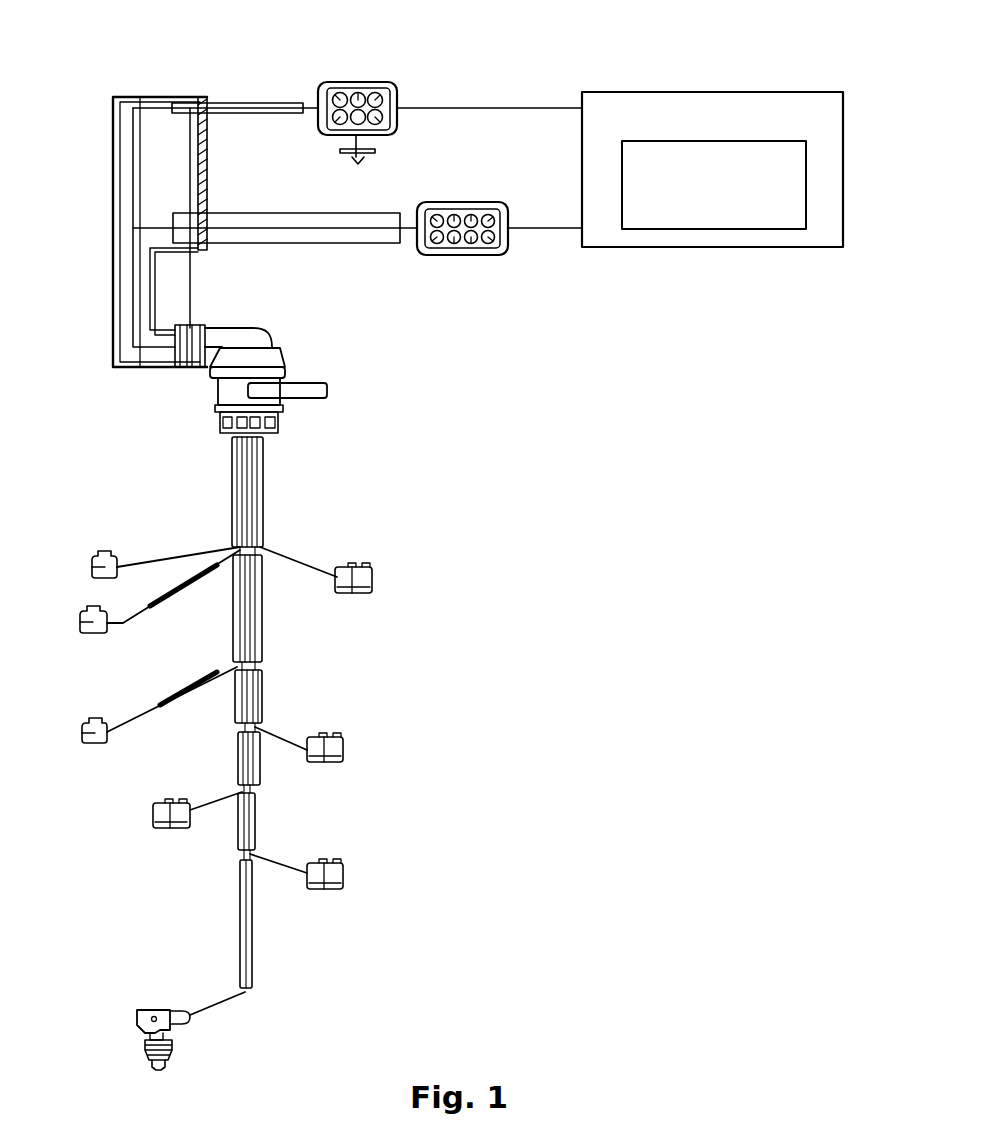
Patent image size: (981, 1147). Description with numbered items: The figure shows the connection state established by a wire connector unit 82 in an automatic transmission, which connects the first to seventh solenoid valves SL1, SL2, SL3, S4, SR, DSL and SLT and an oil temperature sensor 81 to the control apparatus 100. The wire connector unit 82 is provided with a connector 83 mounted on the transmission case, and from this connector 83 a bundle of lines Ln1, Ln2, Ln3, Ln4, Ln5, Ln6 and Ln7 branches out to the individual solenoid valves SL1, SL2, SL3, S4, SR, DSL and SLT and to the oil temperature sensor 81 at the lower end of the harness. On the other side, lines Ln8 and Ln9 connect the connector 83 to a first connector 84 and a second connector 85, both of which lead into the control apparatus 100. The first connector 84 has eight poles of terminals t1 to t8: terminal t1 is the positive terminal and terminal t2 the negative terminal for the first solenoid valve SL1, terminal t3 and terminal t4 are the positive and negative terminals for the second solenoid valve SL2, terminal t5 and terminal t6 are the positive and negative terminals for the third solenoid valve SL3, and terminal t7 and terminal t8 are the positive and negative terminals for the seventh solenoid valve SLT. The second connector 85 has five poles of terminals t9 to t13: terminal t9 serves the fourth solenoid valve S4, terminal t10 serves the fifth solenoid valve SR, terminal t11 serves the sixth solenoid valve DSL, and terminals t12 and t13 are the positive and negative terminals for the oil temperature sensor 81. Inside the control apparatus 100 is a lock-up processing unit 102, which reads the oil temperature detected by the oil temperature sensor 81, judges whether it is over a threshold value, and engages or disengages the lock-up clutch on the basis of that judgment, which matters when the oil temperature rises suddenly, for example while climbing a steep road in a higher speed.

The control apparatus 100 is at (733, 247).
The lock-up processing unit 102 is at (670, 230).
The oil temperature sensor 81 is at (138, 1010).
The wire connector unit 82 is at (107, 356).
The connector 83 is at (213, 385).
The first connector 84 is at (475, 246).
The second connector 85 is at (416, 107).
The terminal t1 is at (437, 220).
The terminal t2 is at (437, 237).
The terminal t3 is at (455, 220).
The terminal t4 is at (454, 237).
The terminal t5 is at (472, 220).
The terminal t6 is at (471, 237).
The terminal t7 is at (490, 221).
The terminal t8 is at (492, 240).
The terminal t9 is at (342, 98).
The terminal t10 is at (333, 120).
The terminal t11 is at (360, 98).
The terminal t12 is at (380, 100).
The terminal t13 is at (377, 120).
The line Ln1 is at (280, 863).
The line Ln2 is at (305, 560).
The line Ln3 is at (283, 733).
The line Ln4 is at (136, 616).
The line Ln5 is at (127, 727).
The line Ln6 is at (175, 557).
The line Ln7 is at (208, 807).
The line Ln8 is at (300, 243).
The line Ln9 is at (263, 100).
The sixth solenoid valve DSL is at (92, 567).
The fourth solenoid valve S4 is at (80, 623).
The fifth solenoid valve SR is at (82, 734).
The seventh solenoid valve SLT is at (153, 818).
The first solenoid valve SL1 is at (343, 876).
The second solenoid valve SL2 is at (372, 578).
The third solenoid valve SL3 is at (343, 749).